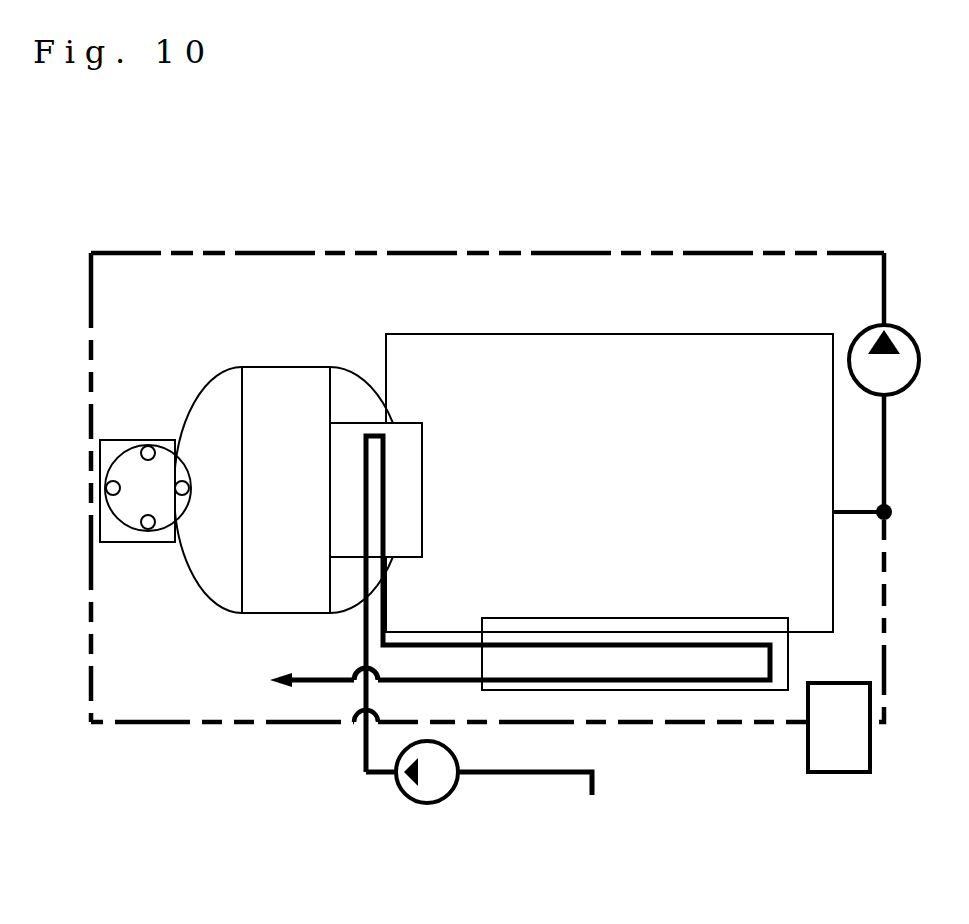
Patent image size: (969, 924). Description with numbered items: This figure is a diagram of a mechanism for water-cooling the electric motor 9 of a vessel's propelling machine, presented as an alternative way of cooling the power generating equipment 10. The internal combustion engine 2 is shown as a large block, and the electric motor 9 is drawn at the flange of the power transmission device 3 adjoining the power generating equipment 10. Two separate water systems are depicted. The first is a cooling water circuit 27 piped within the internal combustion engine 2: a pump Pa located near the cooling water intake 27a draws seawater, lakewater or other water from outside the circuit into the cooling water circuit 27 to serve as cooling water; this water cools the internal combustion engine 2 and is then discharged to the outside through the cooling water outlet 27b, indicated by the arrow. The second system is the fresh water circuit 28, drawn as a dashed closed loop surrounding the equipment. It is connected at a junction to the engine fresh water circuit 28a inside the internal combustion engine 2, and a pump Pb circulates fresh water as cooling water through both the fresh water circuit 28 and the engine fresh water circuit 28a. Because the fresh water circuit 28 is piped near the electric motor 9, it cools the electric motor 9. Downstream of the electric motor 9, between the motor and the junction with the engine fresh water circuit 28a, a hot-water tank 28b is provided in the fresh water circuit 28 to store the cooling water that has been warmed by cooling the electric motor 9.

The internal combustion engine 2 is at (602, 503).
The power transmission device 3 is at (122, 543).
The electric motor 9 is at (168, 440).
The power generating equipment 10 is at (302, 505).
The cooling water circuit 27 is at (362, 757).
The cooling water intake 27a is at (586, 780).
The cooling water outlet 27b is at (305, 683).
The fresh water circuit 28 is at (433, 253).
The engine fresh water circuit 28a is at (860, 509).
The hot-water tank 28b is at (816, 748).
The pump Pa is at (420, 790).
The pump Pb is at (858, 335).